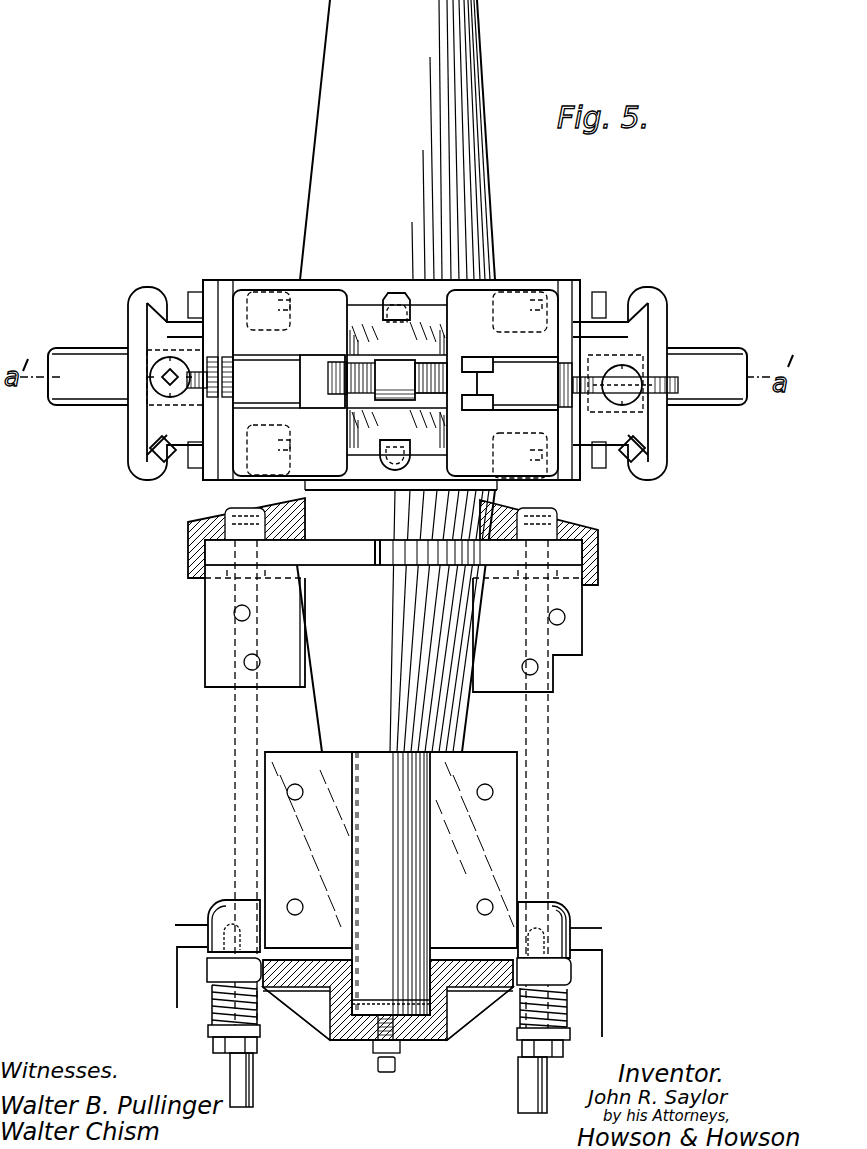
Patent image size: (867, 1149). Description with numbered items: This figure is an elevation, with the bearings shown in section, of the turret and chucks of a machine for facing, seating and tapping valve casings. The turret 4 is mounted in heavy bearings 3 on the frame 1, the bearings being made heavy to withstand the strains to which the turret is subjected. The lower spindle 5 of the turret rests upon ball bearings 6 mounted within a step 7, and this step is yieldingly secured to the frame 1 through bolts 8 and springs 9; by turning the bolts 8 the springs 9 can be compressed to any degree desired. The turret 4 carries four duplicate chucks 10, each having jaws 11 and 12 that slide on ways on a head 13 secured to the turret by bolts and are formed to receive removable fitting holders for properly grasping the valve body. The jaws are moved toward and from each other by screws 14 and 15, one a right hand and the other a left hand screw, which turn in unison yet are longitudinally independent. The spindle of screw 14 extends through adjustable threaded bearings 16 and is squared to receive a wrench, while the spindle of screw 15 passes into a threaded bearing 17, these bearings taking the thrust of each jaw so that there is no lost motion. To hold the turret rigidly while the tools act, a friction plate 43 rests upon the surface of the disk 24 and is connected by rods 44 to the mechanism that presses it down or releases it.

The frame 1 is at (586, 900).
The bearings 3 is at (391, 850).
The turret 4 is at (397, 368).
The lower spindle 5 is at (391, 912).
The ball bearings 6 is at (335, 1003).
The step 7 is at (480, 1013).
The bolts 8 is at (394, 1046).
The springs 9 is at (212, 1008).
The chucks 10 is at (397, 396).
The jaw 11 is at (490, 378).
The jaw 12 is at (310, 379).
The head 13 is at (397, 380).
The screw 14 is at (436, 363).
The screw 15 is at (362, 366).
The threaded bearings 16 is at (168, 360).
The threaded bearing 17 is at (212, 357).
The disk 24 is at (393, 552).
The friction plate 43 is at (399, 595).
The rods 44 is at (253, 1076).